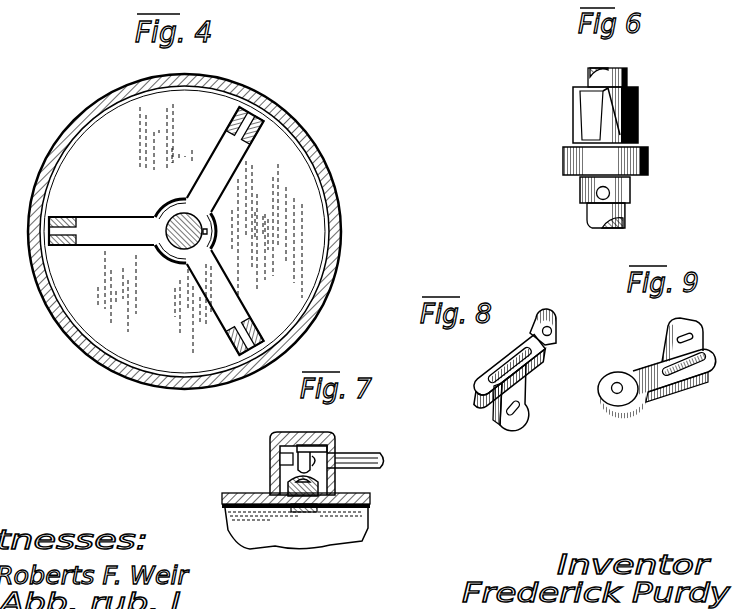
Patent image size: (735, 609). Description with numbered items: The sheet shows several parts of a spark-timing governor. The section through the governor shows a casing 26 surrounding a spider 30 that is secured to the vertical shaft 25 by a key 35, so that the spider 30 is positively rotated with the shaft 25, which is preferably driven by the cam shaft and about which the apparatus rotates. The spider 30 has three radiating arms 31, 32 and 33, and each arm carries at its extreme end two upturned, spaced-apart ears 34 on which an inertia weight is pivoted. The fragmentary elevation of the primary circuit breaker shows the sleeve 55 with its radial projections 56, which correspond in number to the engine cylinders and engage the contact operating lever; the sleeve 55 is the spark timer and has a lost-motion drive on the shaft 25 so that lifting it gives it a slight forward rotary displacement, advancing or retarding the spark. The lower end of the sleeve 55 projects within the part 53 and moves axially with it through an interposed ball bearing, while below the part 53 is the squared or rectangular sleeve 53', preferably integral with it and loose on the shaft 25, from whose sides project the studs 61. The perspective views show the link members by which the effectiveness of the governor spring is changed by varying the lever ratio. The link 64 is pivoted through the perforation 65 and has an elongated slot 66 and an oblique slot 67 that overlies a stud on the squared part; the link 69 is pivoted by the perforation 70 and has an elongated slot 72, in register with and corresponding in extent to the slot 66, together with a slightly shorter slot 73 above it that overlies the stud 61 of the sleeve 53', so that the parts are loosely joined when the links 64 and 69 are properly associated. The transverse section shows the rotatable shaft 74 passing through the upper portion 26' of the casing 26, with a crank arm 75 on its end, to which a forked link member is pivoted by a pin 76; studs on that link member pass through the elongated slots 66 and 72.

In FIG. 4, the vertical shaft 25 is at (189, 228).
In FIG. 6, the vertical shaft 25 is at (589, 73).
In FIG. 4, the casing 26 is at (194, 231).
In FIG. 7, the upper portion of the casing 26' is at (318, 491).
In FIG. 4, the spider 30 is at (232, 273).
In FIG. 4, the radiating arm 31 is at (105, 218).
In FIG. 4, the radiating arm 32 is at (218, 162).
In FIG. 4, the radiating arm 33 is at (222, 300).
In FIG. 4, the upturned ears 34 is at (64, 224).
In FIG. 4, the key 35 is at (207, 232).
In FIG. 6, the part 53 is at (627, 159).
In FIG. 6, the squared sleeve 53' is at (628, 190).
In FIG. 6, the sleeve 55 is at (629, 87).
In FIG. 6, the radial projections 56 is at (639, 105).
In FIG. 6, the stud 61 is at (597, 194).
In FIG. 8, the link 64 is at (508, 349).
In FIG. 8, the perforation 65 is at (550, 325).
In FIG. 8, the elongated slot 66 is at (523, 362).
In FIG. 8, the oblique slot 67 is at (518, 409).
In FIG. 9, the link 69 is at (621, 357).
In FIG. 9, the perforation 70 is at (617, 396).
In FIG. 9, the elongated slot 72 is at (683, 372).
In FIG. 9, the slot 73 is at (687, 331).
In FIG. 7, the rotatable shaft 74 is at (378, 455).
In FIG. 7, the crank arm 75 is at (273, 449).
In FIG. 7, the pin 76 is at (313, 508).